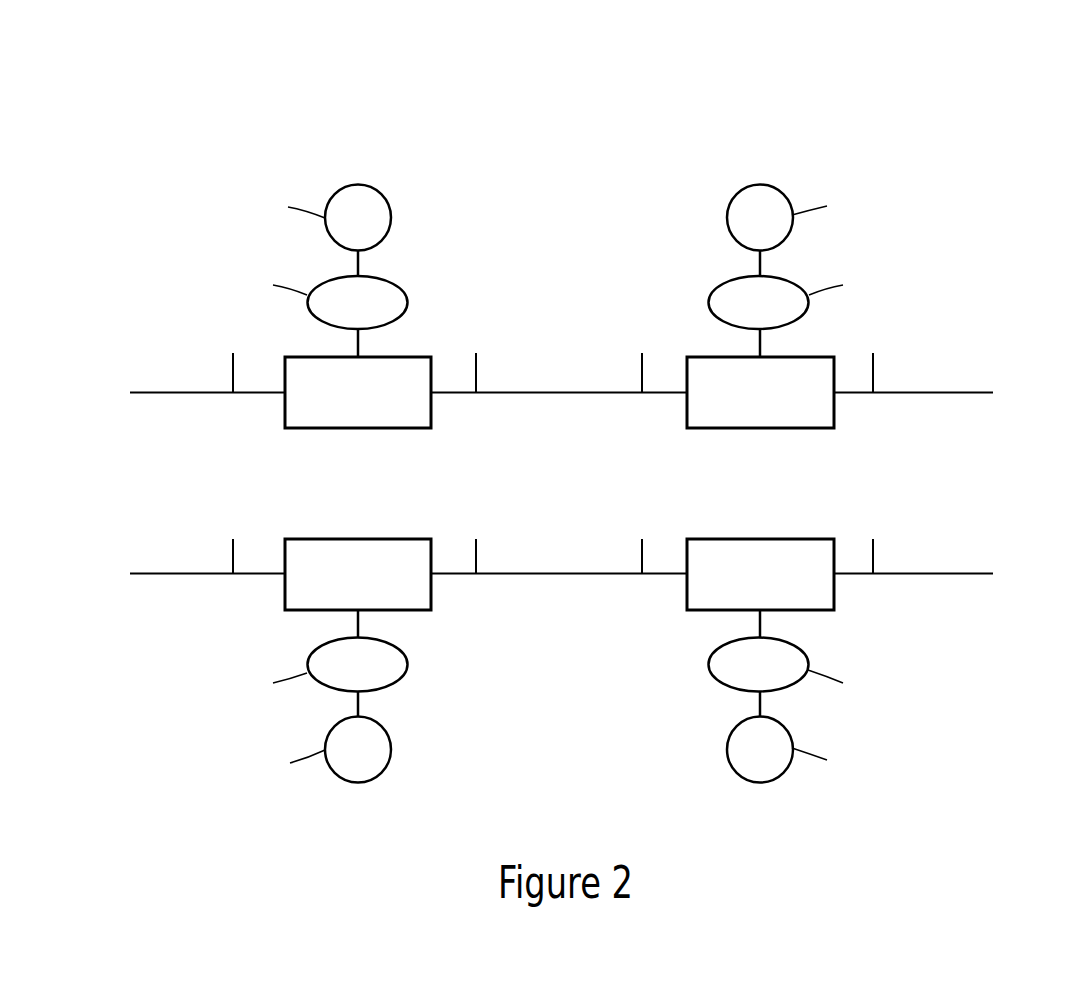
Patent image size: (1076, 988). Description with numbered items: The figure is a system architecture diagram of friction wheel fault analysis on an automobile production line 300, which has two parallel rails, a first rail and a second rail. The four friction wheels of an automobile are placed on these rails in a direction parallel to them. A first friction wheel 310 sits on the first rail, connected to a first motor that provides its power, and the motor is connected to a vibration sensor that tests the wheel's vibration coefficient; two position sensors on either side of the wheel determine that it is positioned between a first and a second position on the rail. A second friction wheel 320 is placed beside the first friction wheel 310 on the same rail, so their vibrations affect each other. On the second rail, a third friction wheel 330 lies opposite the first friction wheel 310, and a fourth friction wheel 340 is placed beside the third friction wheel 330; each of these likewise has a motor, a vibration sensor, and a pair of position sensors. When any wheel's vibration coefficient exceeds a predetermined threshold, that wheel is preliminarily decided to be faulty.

The automobile production line 300 is at (258, 82).
The first friction wheel 310 is at (378, 409).
The second friction wheel 320 is at (780, 409).
The third friction wheel 330 is at (378, 591).
The fourth friction wheel 340 is at (780, 591).